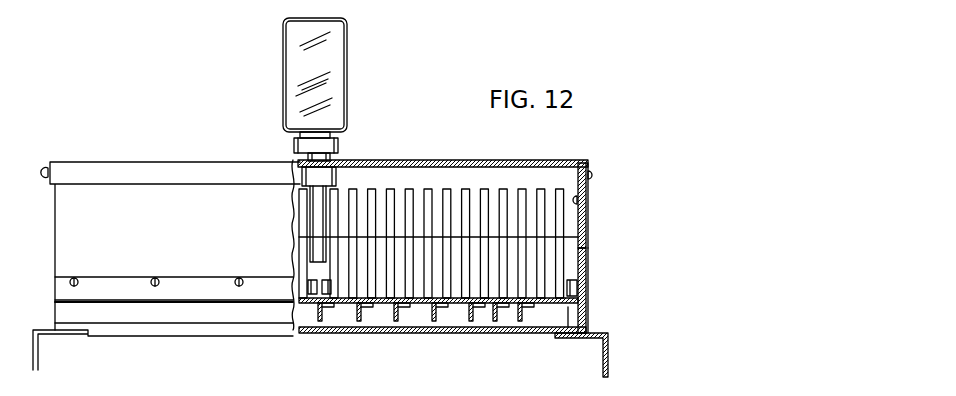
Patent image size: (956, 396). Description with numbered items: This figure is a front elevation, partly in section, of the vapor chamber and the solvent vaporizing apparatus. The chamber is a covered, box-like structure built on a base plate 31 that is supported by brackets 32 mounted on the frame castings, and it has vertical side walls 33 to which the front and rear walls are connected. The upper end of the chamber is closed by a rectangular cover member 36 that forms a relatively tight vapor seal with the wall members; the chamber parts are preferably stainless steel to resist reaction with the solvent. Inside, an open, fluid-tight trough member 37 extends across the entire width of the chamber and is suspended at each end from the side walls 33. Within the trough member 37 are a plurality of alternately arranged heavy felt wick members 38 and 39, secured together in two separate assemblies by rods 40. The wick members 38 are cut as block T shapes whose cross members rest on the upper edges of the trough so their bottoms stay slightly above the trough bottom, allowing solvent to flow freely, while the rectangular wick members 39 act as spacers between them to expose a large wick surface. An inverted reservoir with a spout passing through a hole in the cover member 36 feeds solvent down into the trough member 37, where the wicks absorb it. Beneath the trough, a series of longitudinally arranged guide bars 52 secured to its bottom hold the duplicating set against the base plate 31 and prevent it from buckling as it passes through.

The base plate 31 is at (425, 333).
The brackets 32 is at (612, 362).
The side walls 33 is at (586, 265).
The cover member 36 is at (355, 162).
The trough member 37 is at (584, 223).
The wick members 38 is at (551, 186).
The wick members 39 is at (496, 247).
The rods 40 is at (313, 294).
The guide bars 52 is at (518, 312).